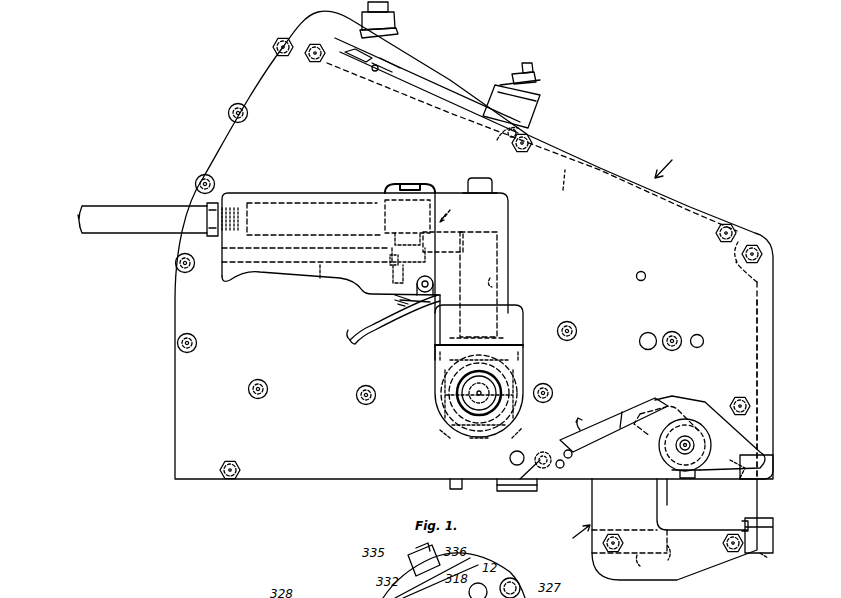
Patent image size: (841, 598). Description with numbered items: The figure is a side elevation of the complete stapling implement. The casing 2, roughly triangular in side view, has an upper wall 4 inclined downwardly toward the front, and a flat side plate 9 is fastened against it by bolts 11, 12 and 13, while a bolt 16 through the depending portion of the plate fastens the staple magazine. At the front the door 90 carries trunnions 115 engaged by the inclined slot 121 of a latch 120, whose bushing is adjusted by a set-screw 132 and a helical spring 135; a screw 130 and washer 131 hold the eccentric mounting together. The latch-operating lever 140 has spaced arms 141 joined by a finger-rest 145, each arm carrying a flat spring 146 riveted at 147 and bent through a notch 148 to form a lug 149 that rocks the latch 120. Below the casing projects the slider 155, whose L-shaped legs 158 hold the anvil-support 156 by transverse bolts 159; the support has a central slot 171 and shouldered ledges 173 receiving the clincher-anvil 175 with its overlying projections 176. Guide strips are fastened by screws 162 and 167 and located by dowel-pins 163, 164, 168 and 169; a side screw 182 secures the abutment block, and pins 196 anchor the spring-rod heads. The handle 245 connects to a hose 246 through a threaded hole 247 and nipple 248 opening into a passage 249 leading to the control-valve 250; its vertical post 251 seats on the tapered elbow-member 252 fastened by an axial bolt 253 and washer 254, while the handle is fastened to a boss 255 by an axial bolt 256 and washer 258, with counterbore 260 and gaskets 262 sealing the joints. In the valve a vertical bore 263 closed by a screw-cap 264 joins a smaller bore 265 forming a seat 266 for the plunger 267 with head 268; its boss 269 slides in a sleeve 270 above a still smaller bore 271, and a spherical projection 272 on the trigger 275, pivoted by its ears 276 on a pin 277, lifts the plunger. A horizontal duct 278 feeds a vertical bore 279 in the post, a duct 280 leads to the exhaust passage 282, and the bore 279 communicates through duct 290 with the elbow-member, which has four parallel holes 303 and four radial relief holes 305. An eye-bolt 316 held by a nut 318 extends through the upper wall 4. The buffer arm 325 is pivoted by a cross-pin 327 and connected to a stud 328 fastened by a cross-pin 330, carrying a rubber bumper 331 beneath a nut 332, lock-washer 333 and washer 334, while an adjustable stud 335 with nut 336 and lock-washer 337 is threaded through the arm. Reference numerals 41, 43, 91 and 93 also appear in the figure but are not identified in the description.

The casing 2 is at (667, 167).
The upper wall 4 is at (561, 188).
The side plate 9 is at (188, 424).
The bolts 11 is at (228, 112).
The bolts 12 is at (320, 46).
The bolts 13 is at (267, 383).
The bolt 16 is at (228, 479).
The bottom lug 41 is at (450, 485).
The stop member 43 is at (687, 478).
The door 90 is at (757, 358).
The hidden arc 91 is at (734, 258).
The corner bolt 93 is at (745, 260).
The trunnions 115 is at (758, 479).
The latch 120 is at (735, 409).
The inclined slot 121 is at (733, 472).
The screw 130 is at (684, 420).
The washer 131 is at (688, 440).
The set-screw 132 is at (640, 412).
The helical spring 135 is at (722, 415).
The latch-operating lever 140 is at (590, 415).
The spaced arms 141 is at (621, 414).
The finger-rest 145 is at (517, 490).
The flat spring 146 is at (598, 438).
The rivet connection 147 is at (555, 480).
The notch 148 is at (657, 500).
The lug 149 is at (662, 485).
The slider 155 is at (569, 538).
The anvil-support 156 is at (649, 565).
The legs 158 is at (595, 505).
The transverse bolts 159 is at (604, 548).
The screws 162 is at (676, 332).
The dowel-pin 163 is at (703, 338).
The dowel-pin 164 is at (651, 333).
The screws 167 is at (547, 452).
The dowel-pin 168 is at (510, 462).
The dowel-pin 169 is at (573, 462).
The central slot 171 is at (681, 558).
The shouldered ledges 173 is at (774, 564).
The clincher-anvil 175 is at (770, 521).
The projections 176 is at (742, 524).
The screws 182 is at (577, 328).
The projecting pins 196 is at (646, 275).
The handle-member 245 is at (282, 270).
The hose 246 is at (133, 227).
The tapered threaded hole 247 is at (230, 206).
The nipple 248 is at (212, 236).
The passage 249 is at (312, 203).
The control-valve 250 is at (454, 212).
The vertical post 251 is at (508, 258).
The elbow-member 252 is at (523, 366).
The axial bolt 253 is at (457, 405).
The washer 254 is at (475, 437).
The boss 255 is at (435, 347).
The axial bolt 256 is at (494, 184).
The washer 258 is at (463, 190).
The counterbore 260 is at (520, 330).
The annular gaskets 262 is at (450, 375).
The vertical bore 263 is at (456, 203).
The screw-cap 264 is at (412, 192).
The smaller bore 265 is at (388, 250).
The seat 266 is at (385, 232).
The valve-plunger 267 is at (394, 300).
The head 268 is at (407, 216).
The boss 269 is at (443, 248).
The sleeve 270 is at (393, 276).
The still smaller bore 271 is at (398, 305).
The spherical projection 272 is at (410, 303).
The trigger 275 is at (384, 328).
The spaced ears 276 is at (414, 311).
The pin 277 is at (430, 283).
The horizontal duct 278 is at (478, 284).
The vertical bore 279 is at (500, 278).
The duct 280 is at (390, 262).
The exhaust passage 282 is at (314, 282).
The channel 290 is at (523, 345).
The drilled holes 303 is at (479, 407).
The radial holes 305 is at (480, 398).
The eye-bolt 316 is at (362, 56).
The nut 318 is at (380, 66).
The arm 325 is at (438, 78).
The cross-pin 327 is at (273, 46).
The stud 328 is at (534, 66).
The cross-pin 330 is at (489, 141).
The bumper 331 is at (522, 108).
The nut 332 is at (536, 77).
The lock-washer 333 is at (538, 86).
The washer 334 is at (540, 98).
The adjustable stud 335 is at (389, 6).
The nut 336 is at (394, 20).
The lock-washer 337 is at (396, 34).